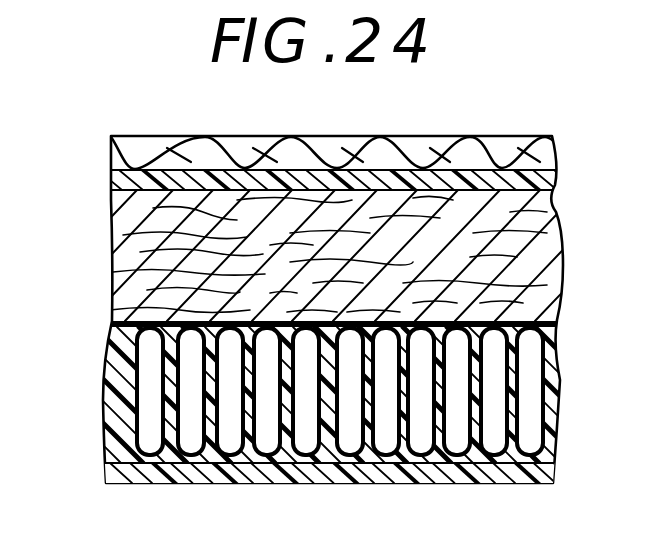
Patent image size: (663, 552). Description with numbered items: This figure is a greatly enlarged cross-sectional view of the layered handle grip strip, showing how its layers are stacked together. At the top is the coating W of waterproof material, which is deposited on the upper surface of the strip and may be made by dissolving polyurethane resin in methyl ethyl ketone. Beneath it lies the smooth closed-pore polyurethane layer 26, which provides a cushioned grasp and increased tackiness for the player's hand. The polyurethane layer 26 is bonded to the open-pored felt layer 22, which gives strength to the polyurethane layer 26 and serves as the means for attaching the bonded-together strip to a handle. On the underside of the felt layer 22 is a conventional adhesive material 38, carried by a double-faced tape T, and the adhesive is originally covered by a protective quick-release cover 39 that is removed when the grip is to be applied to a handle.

The double-faced tape T is at (473, 133).
The protective quick-release cover 39 is at (112, 152).
The adhesive material 38 is at (547, 178).
The felt layer 22 is at (538, 265).
The polyurethane layer 26 is at (508, 380).
The coating of waterproof material W is at (462, 484).